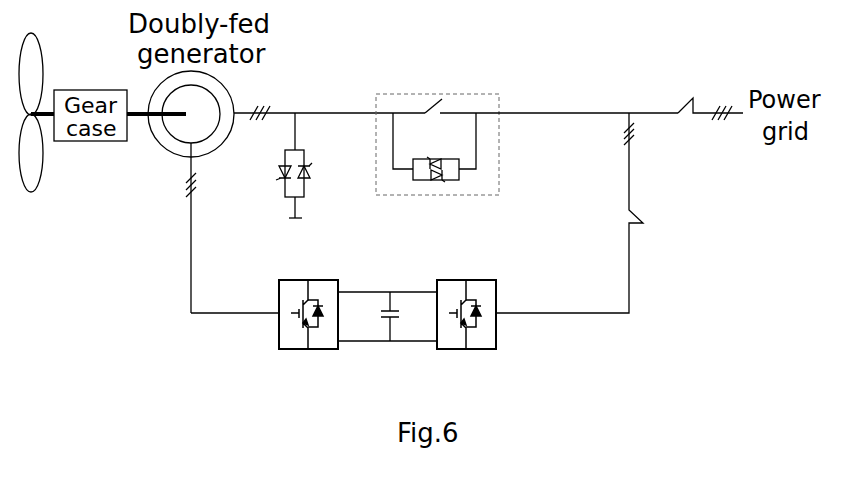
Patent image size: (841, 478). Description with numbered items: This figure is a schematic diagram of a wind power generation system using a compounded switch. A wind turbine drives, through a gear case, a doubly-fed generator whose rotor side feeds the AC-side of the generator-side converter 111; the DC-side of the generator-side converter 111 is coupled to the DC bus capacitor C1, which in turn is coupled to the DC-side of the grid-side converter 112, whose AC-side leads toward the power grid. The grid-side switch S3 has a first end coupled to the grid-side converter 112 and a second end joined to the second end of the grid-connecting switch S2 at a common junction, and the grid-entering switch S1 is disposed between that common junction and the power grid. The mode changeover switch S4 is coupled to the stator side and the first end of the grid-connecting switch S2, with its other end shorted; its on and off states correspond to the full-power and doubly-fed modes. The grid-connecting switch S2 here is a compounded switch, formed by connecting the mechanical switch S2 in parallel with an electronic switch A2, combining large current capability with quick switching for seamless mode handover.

The generator-side converter 111 is at (279, 299).
The grid-side converter 112 is at (497, 298).
The grid-entering switch S1 is at (709, 120).
The grid-connecting switch S2 is at (527, 144).
The grid-side switch S3 is at (585, 213).
The mode changeover switch S4 is at (275, 165).
The electronic switch A2 is at (441, 154).
The DC bus capacitor C1 is at (387, 316).